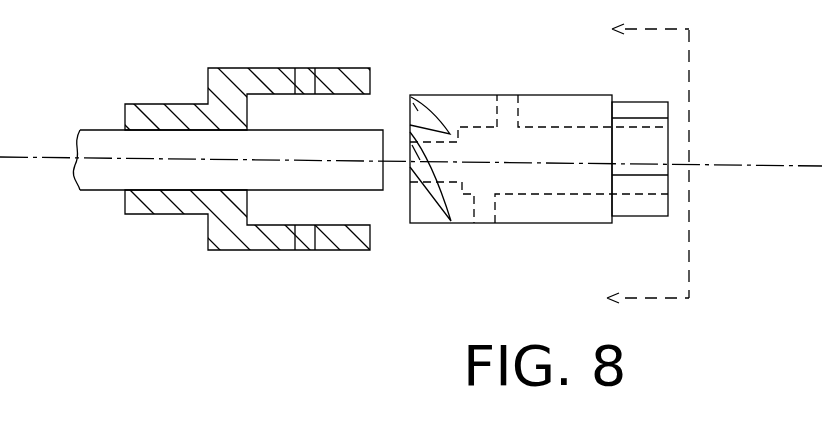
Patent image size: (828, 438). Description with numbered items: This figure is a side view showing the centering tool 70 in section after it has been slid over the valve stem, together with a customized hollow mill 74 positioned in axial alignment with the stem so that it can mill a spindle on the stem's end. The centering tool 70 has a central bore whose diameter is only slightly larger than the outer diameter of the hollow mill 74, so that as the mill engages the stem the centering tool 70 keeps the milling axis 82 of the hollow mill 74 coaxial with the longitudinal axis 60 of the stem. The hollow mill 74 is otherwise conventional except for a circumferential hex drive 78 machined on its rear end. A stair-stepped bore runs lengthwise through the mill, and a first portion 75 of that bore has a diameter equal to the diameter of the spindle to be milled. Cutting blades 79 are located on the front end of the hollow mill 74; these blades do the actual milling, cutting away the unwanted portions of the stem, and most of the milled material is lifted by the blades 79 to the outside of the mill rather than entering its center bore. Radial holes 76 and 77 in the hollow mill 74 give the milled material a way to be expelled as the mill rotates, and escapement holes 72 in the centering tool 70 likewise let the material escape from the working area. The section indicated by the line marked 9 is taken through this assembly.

The longitudinal axis 60 is at (52, 158).
The centering tool 70 is at (232, 68).
The escapement holes 72 is at (305, 68).
The hollow mill 74 is at (465, 95).
The first portion of the bore 75 is at (456, 143).
The radial hole 76 is at (513, 95).
The radial hole 77 is at (480, 213).
The circumferential hex drive 78 is at (659, 102).
The cutting blades 79 is at (410, 125).
The milling axis 82 is at (713, 165).
The section line 9- 9 is at (636, 165).